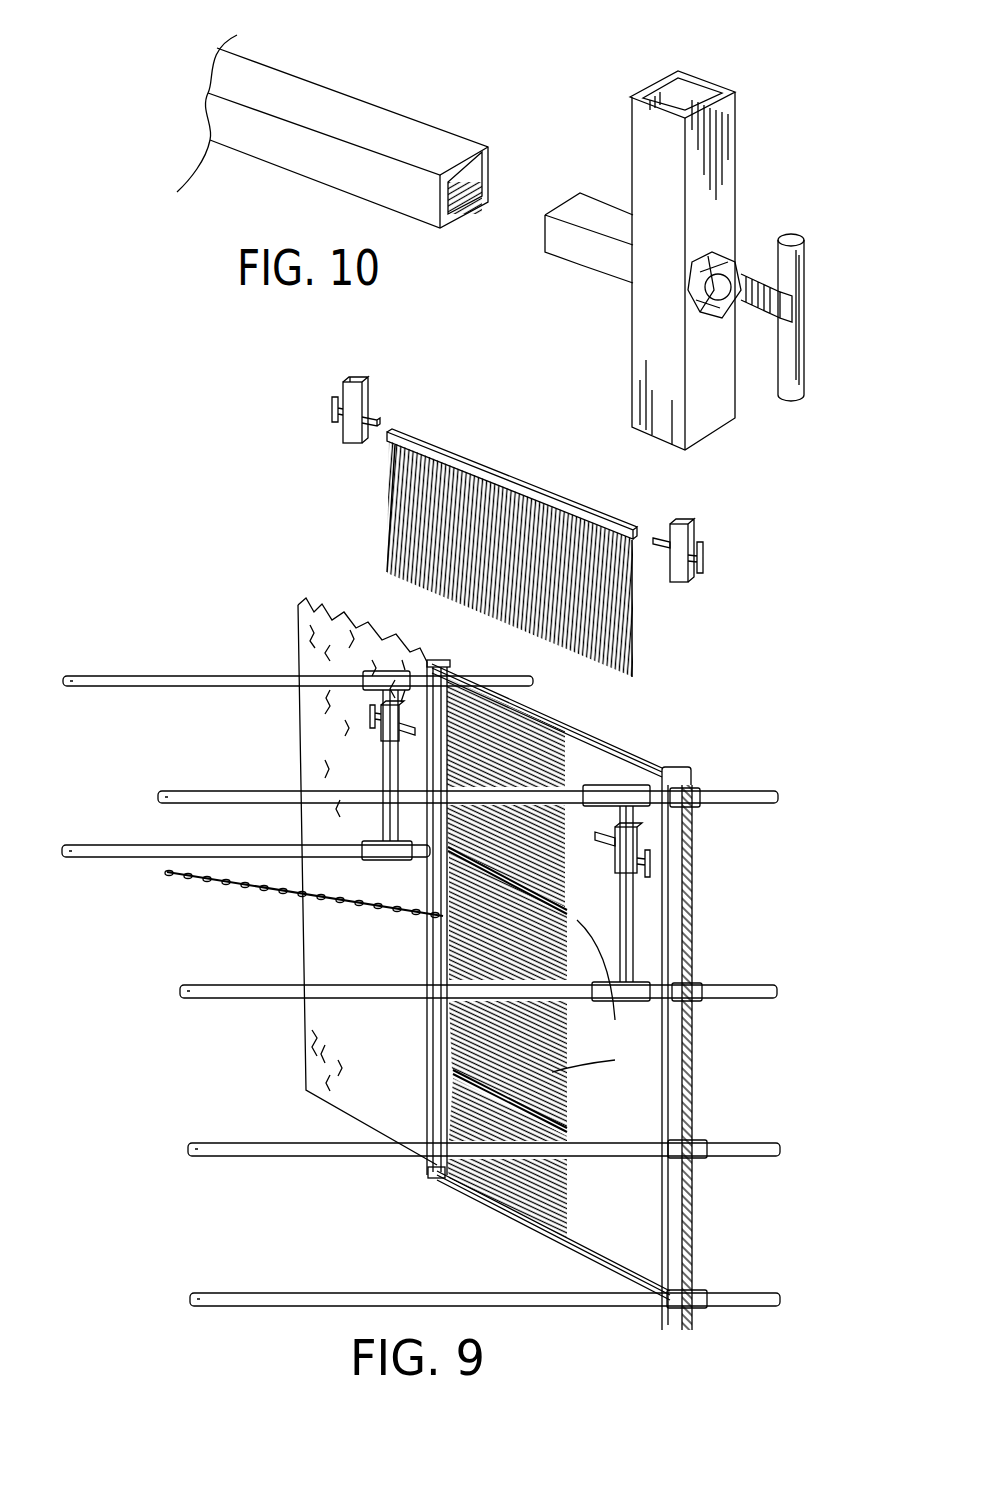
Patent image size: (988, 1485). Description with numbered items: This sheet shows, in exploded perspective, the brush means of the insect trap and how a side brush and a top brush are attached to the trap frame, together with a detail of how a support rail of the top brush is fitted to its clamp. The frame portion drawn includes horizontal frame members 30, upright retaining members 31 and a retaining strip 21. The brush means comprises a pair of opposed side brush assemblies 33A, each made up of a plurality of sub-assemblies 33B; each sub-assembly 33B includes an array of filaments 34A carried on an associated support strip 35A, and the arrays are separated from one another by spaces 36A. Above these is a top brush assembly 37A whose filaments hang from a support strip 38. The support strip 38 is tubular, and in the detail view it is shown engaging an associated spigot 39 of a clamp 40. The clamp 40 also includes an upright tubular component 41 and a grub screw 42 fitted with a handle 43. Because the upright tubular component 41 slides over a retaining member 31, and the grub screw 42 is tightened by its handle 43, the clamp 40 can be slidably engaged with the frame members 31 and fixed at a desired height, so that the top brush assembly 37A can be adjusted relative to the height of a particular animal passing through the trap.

In FIG. 9, the retaining strip 21 is at (692, 957).
In FIG. 9, the horizontal frame members 30 is at (218, 673).
In FIG. 9, the retaining members 31 is at (633, 913).
In FIG. 9, the side brush assemblies 33A is at (409, 942).
In FIG. 9, the sub-assemblies 33B is at (622, 1177).
In FIG. 9, the filaments 34A is at (630, 617).
In FIG. 9, the support strip 35A is at (450, 1030).
In FIG. 9, the spaces 36A is at (602, 996).
In FIG. 9, the top brush assembly 37A is at (580, 788).
In FIG. 10, the support strip 38 is at (350, 115).
In FIG. 9, the support strip 38 is at (535, 488).
In FIG. 9, the spigot 39 is at (602, 217).
In FIG. 9, the clamp 40 is at (556, 441).
In FIG. 9, the upright tubular component 41 is at (715, 398).
In FIG. 9, the grub screw 42 is at (740, 310).
In FIG. 9, the handle 43 is at (797, 237).